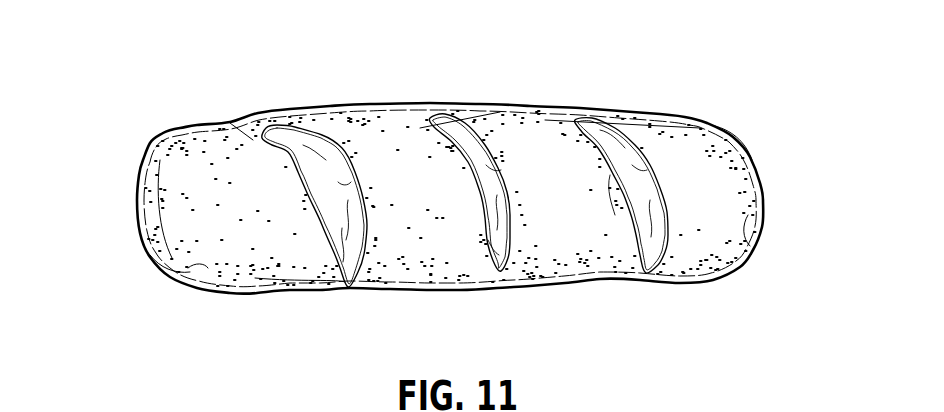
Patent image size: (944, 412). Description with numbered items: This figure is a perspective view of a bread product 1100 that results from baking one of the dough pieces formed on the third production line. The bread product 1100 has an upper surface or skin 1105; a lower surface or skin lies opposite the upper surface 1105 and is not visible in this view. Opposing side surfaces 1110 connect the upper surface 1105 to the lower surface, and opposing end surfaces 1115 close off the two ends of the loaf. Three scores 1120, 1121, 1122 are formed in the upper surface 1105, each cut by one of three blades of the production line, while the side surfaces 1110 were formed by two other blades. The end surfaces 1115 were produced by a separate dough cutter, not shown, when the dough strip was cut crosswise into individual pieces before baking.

The bread product 1100 is at (776, 142).
The upper surface 1105 is at (723, 248).
The side surfaces 1110 is at (259, 113).
The end surfaces 1115 is at (136, 195).
The score 1120 is at (347, 287).
The score 1121 is at (455, 127).
The score 1122 is at (660, 242).